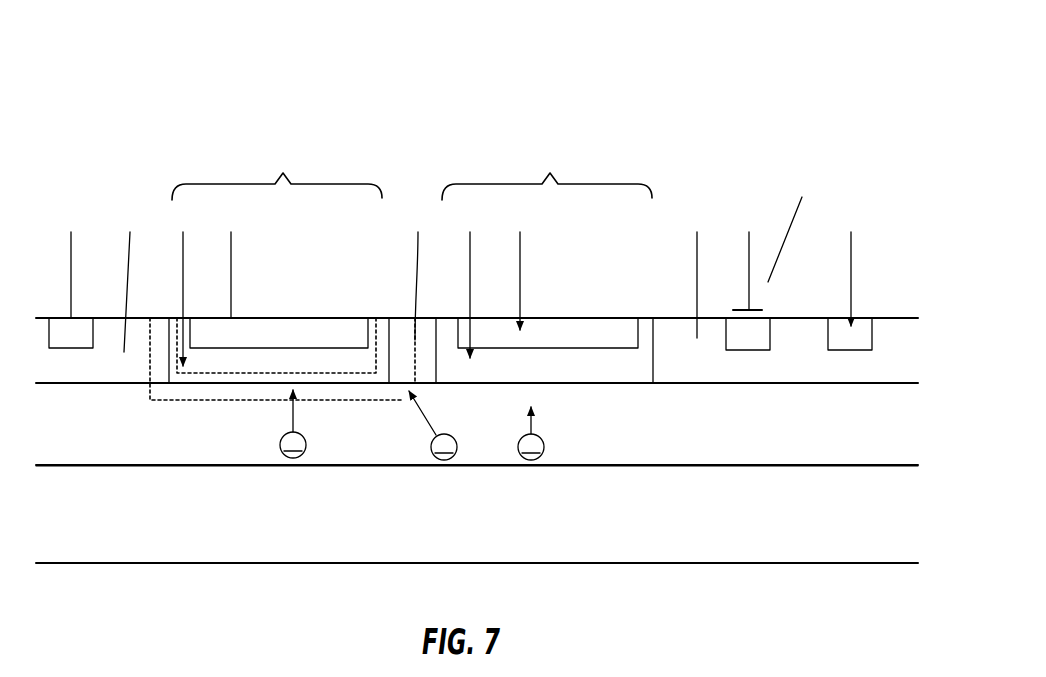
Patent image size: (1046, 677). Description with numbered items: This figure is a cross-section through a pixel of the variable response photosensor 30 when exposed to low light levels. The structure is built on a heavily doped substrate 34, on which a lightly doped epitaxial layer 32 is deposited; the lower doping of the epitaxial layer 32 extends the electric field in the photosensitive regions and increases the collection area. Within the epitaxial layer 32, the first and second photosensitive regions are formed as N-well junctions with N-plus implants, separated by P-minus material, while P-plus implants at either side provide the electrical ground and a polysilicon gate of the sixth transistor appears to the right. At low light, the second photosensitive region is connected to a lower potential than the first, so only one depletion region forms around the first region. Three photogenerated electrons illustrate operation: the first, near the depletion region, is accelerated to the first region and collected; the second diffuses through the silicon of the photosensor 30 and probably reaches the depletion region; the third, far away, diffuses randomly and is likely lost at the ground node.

The variable response photosensor 30 is at (802, 110).
The epitaxial layer 32 is at (477, 424).
The substrate 34 is at (477, 514).